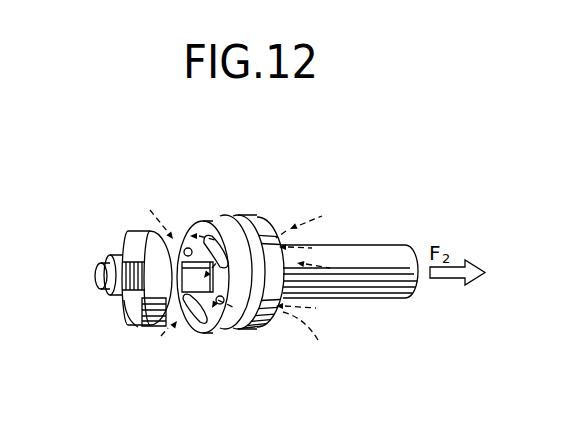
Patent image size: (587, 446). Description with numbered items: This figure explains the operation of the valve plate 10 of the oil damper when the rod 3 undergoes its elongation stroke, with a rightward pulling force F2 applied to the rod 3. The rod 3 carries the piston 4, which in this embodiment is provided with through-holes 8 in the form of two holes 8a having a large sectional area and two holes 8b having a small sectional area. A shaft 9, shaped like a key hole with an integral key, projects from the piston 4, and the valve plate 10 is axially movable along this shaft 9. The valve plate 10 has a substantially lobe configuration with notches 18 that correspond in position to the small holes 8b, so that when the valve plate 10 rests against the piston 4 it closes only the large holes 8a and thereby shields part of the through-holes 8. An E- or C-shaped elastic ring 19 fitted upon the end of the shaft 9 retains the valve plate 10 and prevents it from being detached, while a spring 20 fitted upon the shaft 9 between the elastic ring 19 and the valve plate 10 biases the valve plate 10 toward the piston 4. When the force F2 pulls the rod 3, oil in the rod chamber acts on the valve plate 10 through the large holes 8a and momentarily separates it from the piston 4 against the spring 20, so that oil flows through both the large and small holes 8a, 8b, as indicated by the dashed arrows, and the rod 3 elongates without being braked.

The rod 3 is at (347, 262).
The piston 4 is at (266, 236).
The through-holes 8 is at (217, 273).
The holes having a large sectional area 8a is at (209, 236).
The holes having a small sectional area 8b is at (185, 248).
The shaft 9 is at (189, 295).
The valve plate 10 is at (134, 240).
The notches 18 is at (118, 248).
The elastic ring 19 is at (117, 308).
The spring 20 is at (131, 322).